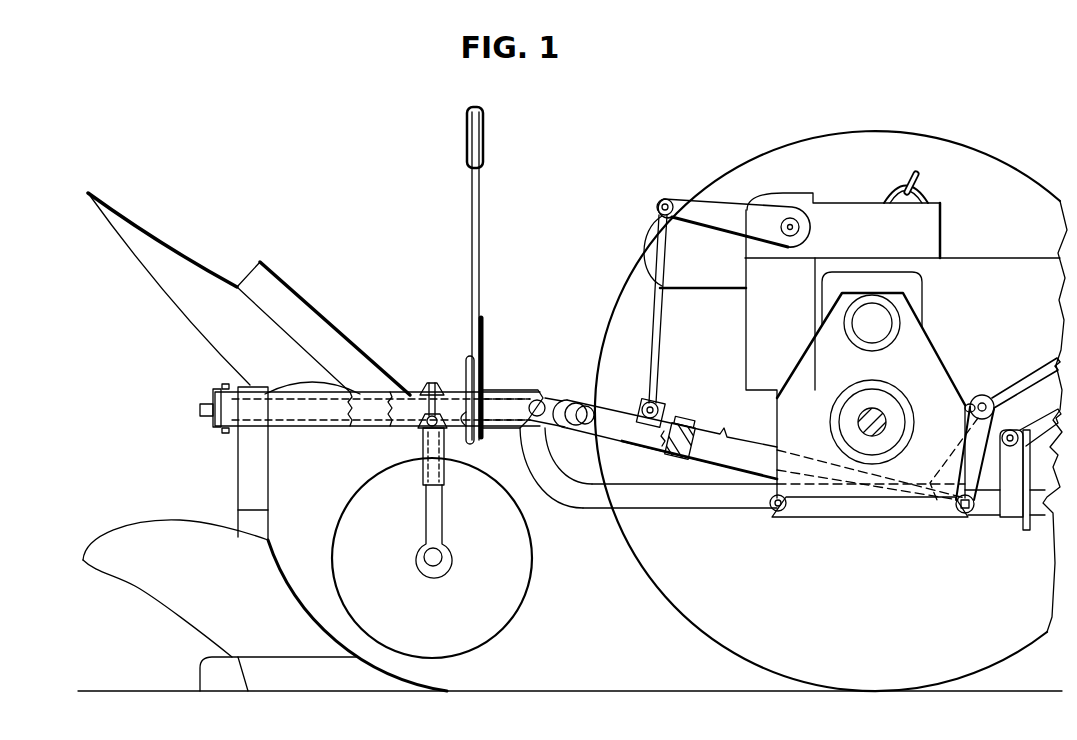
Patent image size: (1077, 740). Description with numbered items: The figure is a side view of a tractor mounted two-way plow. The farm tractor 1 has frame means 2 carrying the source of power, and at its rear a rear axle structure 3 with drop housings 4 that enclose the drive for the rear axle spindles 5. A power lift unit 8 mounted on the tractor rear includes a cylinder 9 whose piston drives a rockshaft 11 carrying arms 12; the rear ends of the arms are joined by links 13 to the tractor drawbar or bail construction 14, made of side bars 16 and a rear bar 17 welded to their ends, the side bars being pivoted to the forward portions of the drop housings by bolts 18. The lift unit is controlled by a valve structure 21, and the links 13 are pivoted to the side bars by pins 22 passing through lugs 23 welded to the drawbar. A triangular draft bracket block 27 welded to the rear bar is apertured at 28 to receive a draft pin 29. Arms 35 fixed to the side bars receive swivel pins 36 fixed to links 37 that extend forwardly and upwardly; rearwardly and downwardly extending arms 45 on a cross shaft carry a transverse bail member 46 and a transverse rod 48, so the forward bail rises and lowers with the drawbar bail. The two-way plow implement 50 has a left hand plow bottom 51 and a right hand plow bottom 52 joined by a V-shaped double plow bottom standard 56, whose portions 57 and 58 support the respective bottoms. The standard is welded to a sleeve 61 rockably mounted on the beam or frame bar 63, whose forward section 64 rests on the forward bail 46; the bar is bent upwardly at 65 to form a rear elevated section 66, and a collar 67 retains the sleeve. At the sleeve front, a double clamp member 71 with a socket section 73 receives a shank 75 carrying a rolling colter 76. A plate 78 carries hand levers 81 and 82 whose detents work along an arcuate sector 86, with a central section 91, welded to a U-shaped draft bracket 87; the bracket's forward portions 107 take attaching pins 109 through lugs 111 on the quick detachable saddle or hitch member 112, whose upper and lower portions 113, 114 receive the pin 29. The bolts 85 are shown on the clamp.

The farm tractor 1 is at (997, 244).
The frame means 2 is at (1025, 265).
The rear axle structure 3 is at (902, 256).
The drop housings 4 is at (937, 372).
The rear axle spindles 5 is at (862, 414).
The power lift unit 8 is at (870, 201).
The cylinder 9 is at (930, 208).
The rockshaft 11 is at (790, 226).
The arms 12 is at (708, 213).
The links 13 is at (657, 322).
The tractor drawbar or bail construction 14 is at (743, 437).
The side bars 16 is at (750, 457).
The rear bar 17 is at (585, 408).
The bolts 18 is at (963, 512).
The valve structure 21 is at (897, 181).
The pins 22 is at (642, 402).
The lugs 23 is at (663, 402).
The draft bracket block 27 is at (657, 444).
The aperture 28 is at (683, 453).
The draft pin 29 is at (684, 420).
The arms 35 is at (966, 429).
The swivel pins 36 is at (984, 397).
The links 37 is at (1027, 378).
The arms 45 is at (1040, 428).
The transverse bail member 46 is at (1008, 503).
The transverse rod 48 is at (1014, 430).
The two-way plow implement 50 is at (239, 231).
The left hand plow bottom 51 is at (180, 297).
The right hand plow bottom 52 is at (163, 598).
The double plow bottom standard 56 is at (231, 459).
The standard portion 57 is at (248, 385).
The standard portion 58 is at (253, 485).
The sleeve 61 is at (347, 390).
The beam or frame bar 63 is at (609, 512).
The forward section 64 is at (1033, 503).
The upward bend 65 is at (533, 470).
The rear elevated section 66 is at (373, 405).
The collar 67 is at (200, 410).
The double clamp member 71 is at (432, 379).
The socket section 73 is at (424, 468).
The shank 75 is at (436, 501).
The rolling colter 76 is at (493, 597).
The plate 78 is at (467, 355).
The hand lever 81 is at (464, 421).
The hand lever 82 is at (481, 217).
The bolts 85 is at (418, 462).
The arcuate sector 86 is at (485, 350).
The draft bracket 87 is at (500, 388).
The central section 91 is at (482, 336).
The forward portions 107 is at (522, 392).
The attaching pins 109 is at (539, 401).
The lugs 111 is at (552, 424).
The saddle or hitch member 112 is at (627, 451).
The upper portion 113 is at (603, 430).
The lower portion 114 is at (612, 436).